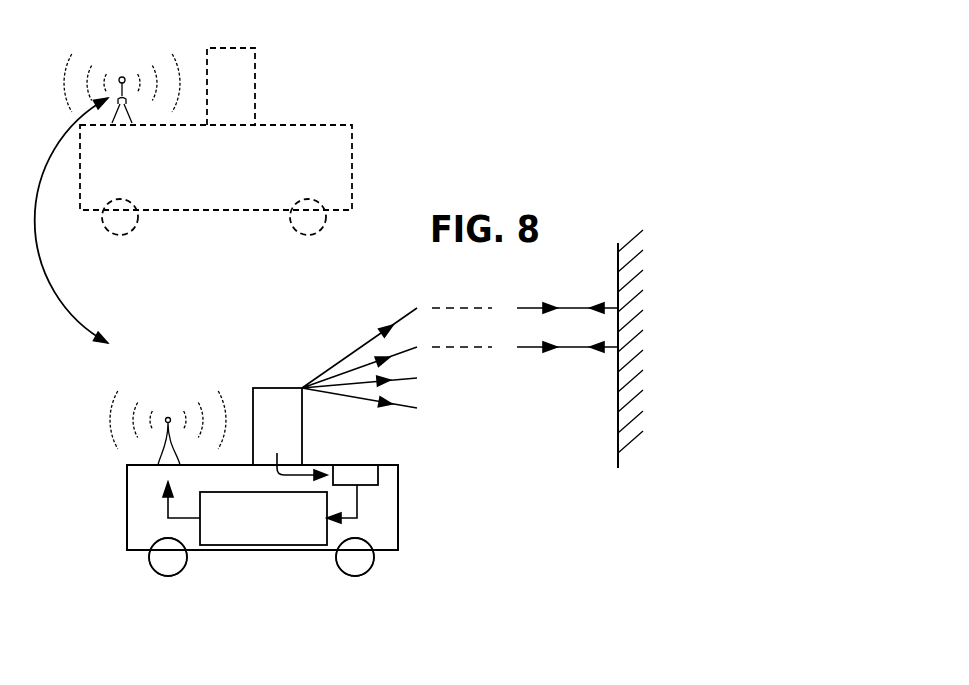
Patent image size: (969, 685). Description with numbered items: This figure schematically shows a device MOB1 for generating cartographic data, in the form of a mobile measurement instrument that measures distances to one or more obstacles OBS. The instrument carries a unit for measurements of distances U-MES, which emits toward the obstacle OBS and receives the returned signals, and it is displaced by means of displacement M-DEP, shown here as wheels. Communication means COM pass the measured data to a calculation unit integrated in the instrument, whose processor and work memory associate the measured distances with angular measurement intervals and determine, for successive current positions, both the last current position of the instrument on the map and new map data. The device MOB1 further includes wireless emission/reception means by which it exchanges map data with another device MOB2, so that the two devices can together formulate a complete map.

The other device MOB2 is at (363, 150).
The device MOB1 is at (122, 533).
The unit for measurements of distances U-MES is at (270, 387).
The communication means COM is at (362, 477).
The obstacle OBS is at (617, 447).
The means of displacement M-DEP is at (338, 568).